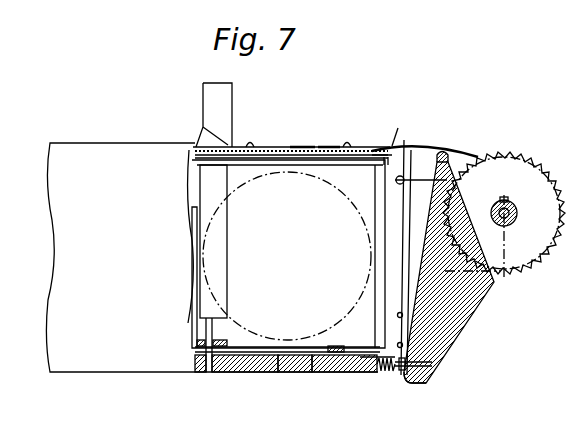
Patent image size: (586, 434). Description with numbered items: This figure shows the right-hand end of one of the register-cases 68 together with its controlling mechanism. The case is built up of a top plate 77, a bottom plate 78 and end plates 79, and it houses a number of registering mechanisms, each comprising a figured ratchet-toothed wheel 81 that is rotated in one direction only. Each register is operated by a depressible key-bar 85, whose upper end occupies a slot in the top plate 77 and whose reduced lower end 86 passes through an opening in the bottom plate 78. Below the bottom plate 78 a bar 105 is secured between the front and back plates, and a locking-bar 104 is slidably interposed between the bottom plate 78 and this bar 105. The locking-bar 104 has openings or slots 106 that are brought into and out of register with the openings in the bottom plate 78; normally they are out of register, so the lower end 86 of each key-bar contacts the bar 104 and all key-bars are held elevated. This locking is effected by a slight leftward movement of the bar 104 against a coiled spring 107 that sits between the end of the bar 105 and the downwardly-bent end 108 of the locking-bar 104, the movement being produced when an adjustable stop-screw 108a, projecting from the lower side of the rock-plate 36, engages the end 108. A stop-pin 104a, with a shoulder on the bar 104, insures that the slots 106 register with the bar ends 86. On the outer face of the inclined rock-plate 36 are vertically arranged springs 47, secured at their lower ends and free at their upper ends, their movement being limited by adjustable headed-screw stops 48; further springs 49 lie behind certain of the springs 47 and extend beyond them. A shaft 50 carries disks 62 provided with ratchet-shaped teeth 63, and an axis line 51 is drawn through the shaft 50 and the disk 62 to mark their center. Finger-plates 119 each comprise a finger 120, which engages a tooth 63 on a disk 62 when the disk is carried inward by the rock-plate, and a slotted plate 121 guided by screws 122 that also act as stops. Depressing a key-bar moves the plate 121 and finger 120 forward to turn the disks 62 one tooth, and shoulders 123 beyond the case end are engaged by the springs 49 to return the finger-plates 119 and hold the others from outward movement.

The rock-plate 36 is at (449, 268).
The springs 47 is at (391, 257).
The stops 48 is at (421, 186).
The springs 49 is at (421, 200).
The shaft 50 is at (518, 214).
The saw axis line 51 is at (493, 274).
The disks 62 is at (504, 213).
The ratchet-shaped teeth 63 is at (522, 166).
The register-case 68 is at (212, 269).
The top plate 77 is at (252, 146).
The bottom plate 78 is at (338, 375).
The end plate 79 is at (378, 290).
The figured ratchet-toothed wheel 81 is at (287, 256).
The key-bar 85 is at (213, 241).
The lower end of key-bar 86 is at (206, 330).
The locking-bar 104 is at (287, 375).
The stop-pin 104a is at (325, 348).
The bar 105 is at (245, 375).
The openings or slots 106 is at (208, 375).
The coiled spring 107 is at (384, 377).
The downwardly-bent end 108 is at (404, 378).
The adjustable stop-screw 108a is at (418, 364).
The finger-plate 119 is at (303, 136).
The finger 120 is at (425, 144).
The plate 121 is at (332, 136).
The screws 122 is at (358, 136).
The shoulders 123 is at (408, 131).